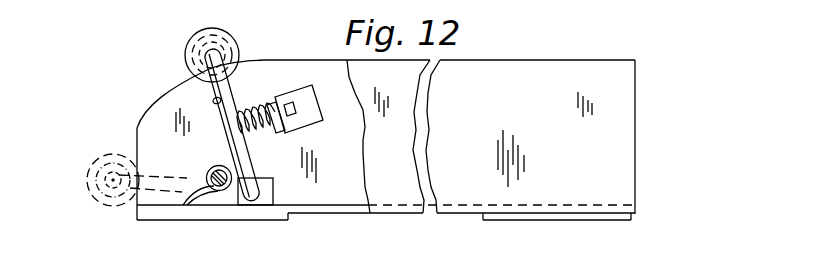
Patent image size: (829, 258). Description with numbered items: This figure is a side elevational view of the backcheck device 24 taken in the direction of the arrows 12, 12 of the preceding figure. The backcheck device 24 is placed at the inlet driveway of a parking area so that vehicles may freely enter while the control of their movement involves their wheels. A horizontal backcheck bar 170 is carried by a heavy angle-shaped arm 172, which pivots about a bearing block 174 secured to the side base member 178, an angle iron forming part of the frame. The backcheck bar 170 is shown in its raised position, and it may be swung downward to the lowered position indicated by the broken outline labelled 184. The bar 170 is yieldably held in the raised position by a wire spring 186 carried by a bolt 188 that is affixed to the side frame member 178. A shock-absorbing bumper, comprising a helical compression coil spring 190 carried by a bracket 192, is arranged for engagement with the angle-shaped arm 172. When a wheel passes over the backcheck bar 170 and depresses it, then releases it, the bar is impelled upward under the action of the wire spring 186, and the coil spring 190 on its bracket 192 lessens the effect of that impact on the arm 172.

The viewing direction arrows 12 is at (644, 0).
The backcheck device 24 is at (654, 116).
The horizontal backcheck bar 170 is at (207, 32).
The angle-shaped arms 172 is at (208, 72).
The bearing blocks 174 is at (268, 178).
The side base member 178 is at (160, 113).
The lowered position (broken outline) 184 is at (95, 195).
The wire spring 186 is at (232, 161).
The bolt 188 is at (223, 186).
The helical compression coil spring 190 is at (259, 100).
The bracket 192 is at (308, 120).